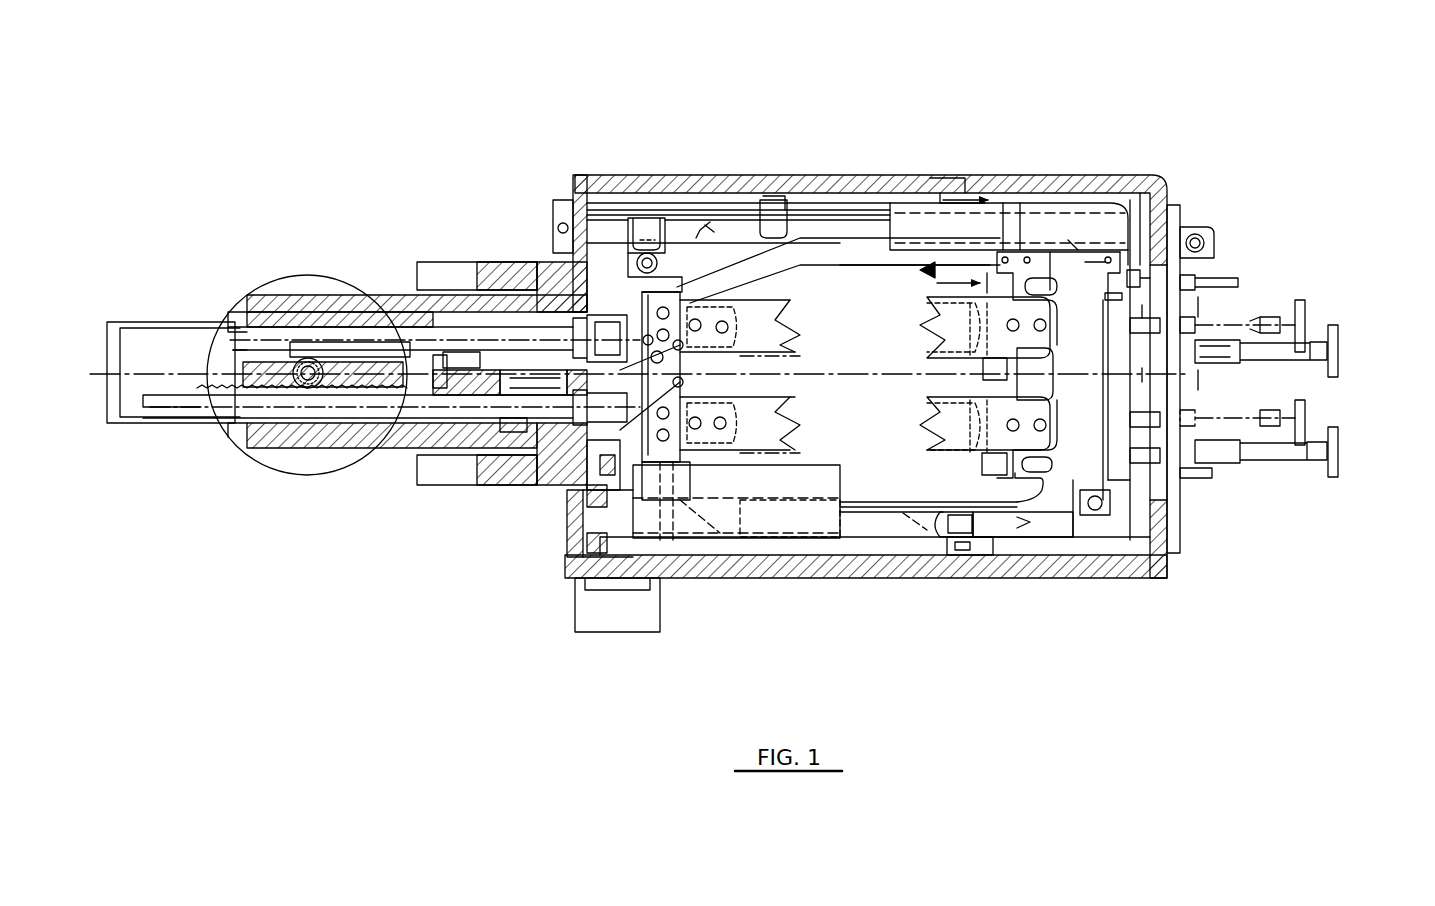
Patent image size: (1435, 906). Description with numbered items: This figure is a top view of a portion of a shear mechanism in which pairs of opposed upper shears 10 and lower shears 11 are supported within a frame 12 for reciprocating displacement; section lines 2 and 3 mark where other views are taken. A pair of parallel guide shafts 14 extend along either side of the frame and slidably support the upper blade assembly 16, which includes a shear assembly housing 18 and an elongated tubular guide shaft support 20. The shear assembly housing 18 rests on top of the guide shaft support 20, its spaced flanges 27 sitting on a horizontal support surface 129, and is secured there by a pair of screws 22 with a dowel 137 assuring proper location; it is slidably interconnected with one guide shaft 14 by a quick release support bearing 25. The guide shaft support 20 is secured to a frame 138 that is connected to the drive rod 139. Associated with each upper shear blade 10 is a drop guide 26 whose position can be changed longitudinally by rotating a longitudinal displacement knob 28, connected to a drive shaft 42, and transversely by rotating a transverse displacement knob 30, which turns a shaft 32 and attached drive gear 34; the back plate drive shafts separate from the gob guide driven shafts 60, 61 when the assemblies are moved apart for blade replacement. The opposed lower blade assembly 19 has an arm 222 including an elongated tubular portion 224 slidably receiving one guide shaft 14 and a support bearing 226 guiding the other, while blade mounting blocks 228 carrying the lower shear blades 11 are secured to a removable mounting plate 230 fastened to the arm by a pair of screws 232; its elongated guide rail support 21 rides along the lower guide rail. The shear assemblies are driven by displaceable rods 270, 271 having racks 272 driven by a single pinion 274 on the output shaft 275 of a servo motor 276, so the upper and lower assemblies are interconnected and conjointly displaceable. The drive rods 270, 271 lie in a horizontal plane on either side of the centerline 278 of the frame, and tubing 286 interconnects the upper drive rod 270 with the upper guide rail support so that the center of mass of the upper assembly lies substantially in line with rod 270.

The section line 2- 2 is at (1202, 307).
The section line 3- 3 is at (1137, 310).
The upper shear blade 10 is at (940, 330).
The lower shear blade 11 is at (790, 333).
The frame 12 is at (965, 180).
The guide shaft 14 is at (838, 215).
The upper blade assembly 16 is at (1090, 250).
The shear assembly housing 18 is at (1063, 297).
The lower blade assembly 19 is at (683, 283).
The elongated tubular guide shaft support 20 is at (1028, 268).
The elongated guide rail support 21 is at (720, 520).
The screw 22 is at (1005, 223).
The quick release support bearing 25 is at (1100, 520).
The drop guide 26 is at (935, 300).
The spaced flange 27 is at (1072, 252).
The longitudinal displacement knob 28 is at (1305, 305).
The transverse displacement knob 30 is at (1345, 362).
The shaft 32 is at (1268, 460).
The drive gear 34 is at (1190, 470).
The drive shaft 42 is at (1255, 322).
The gob guide driven shaft 60 is at (1108, 465).
The gob guide driven shaft 61 is at (1100, 428).
The horizontal support surface 129 is at (1088, 262).
The dowel 137 is at (1032, 270).
The frame 138 is at (830, 255).
The drive rod 139 is at (600, 320).
The arm 222 is at (715, 448).
The elongated tubular portion 224 is at (753, 525).
The support bearing 226 is at (665, 300).
The blade mounting block 228 is at (752, 396).
The removable mounting plate 230 is at (580, 480).
The screw 232 is at (545, 470).
The displaceable rod 270 is at (520, 330).
The displaceable rod 271 is at (375, 405).
The rack 272 is at (305, 340).
The pinion 274 is at (300, 390).
The output shaft 275 is at (310, 388).
The servo motor 276 is at (345, 280).
The centerline 278 is at (880, 400).
The tubing 286 is at (812, 250).